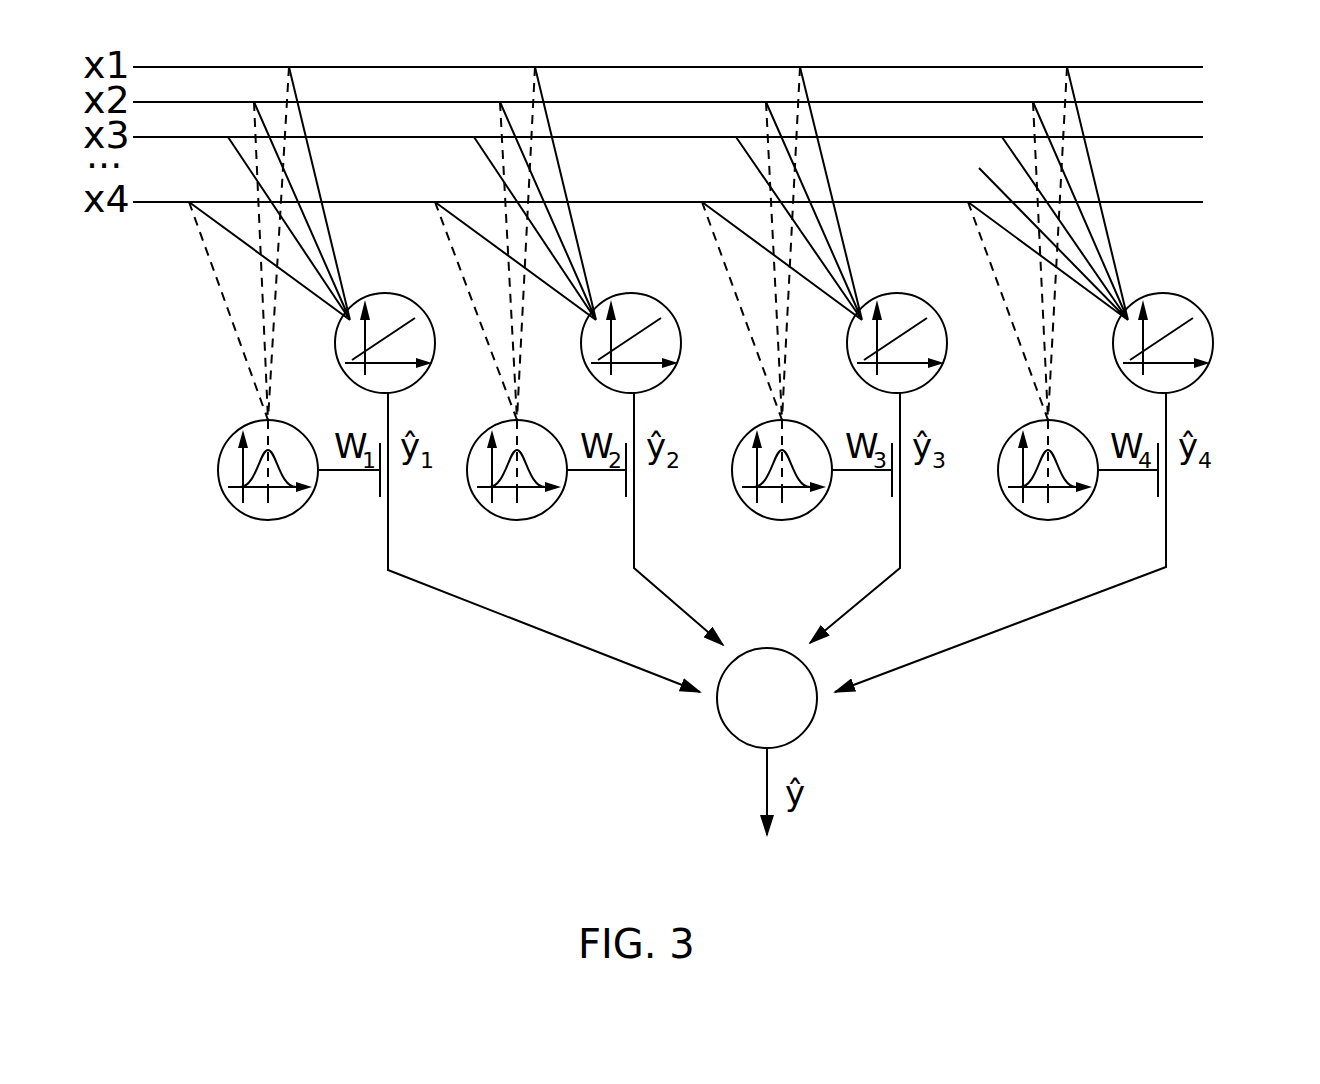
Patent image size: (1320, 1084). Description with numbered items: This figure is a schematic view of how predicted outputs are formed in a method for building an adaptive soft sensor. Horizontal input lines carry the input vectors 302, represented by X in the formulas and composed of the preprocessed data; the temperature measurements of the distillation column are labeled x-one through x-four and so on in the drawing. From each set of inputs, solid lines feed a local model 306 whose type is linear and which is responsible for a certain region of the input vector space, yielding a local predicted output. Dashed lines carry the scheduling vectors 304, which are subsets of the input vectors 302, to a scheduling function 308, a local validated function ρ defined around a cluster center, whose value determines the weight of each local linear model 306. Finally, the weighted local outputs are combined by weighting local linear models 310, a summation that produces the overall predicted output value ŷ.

The input vectors 302 is at (320, 287).
The scheduling vectors 304 is at (253, 388).
The local model 306 is at (1185, 343).
The scheduling function 308 is at (1050, 502).
The weighting of local linear models 310 is at (787, 723).